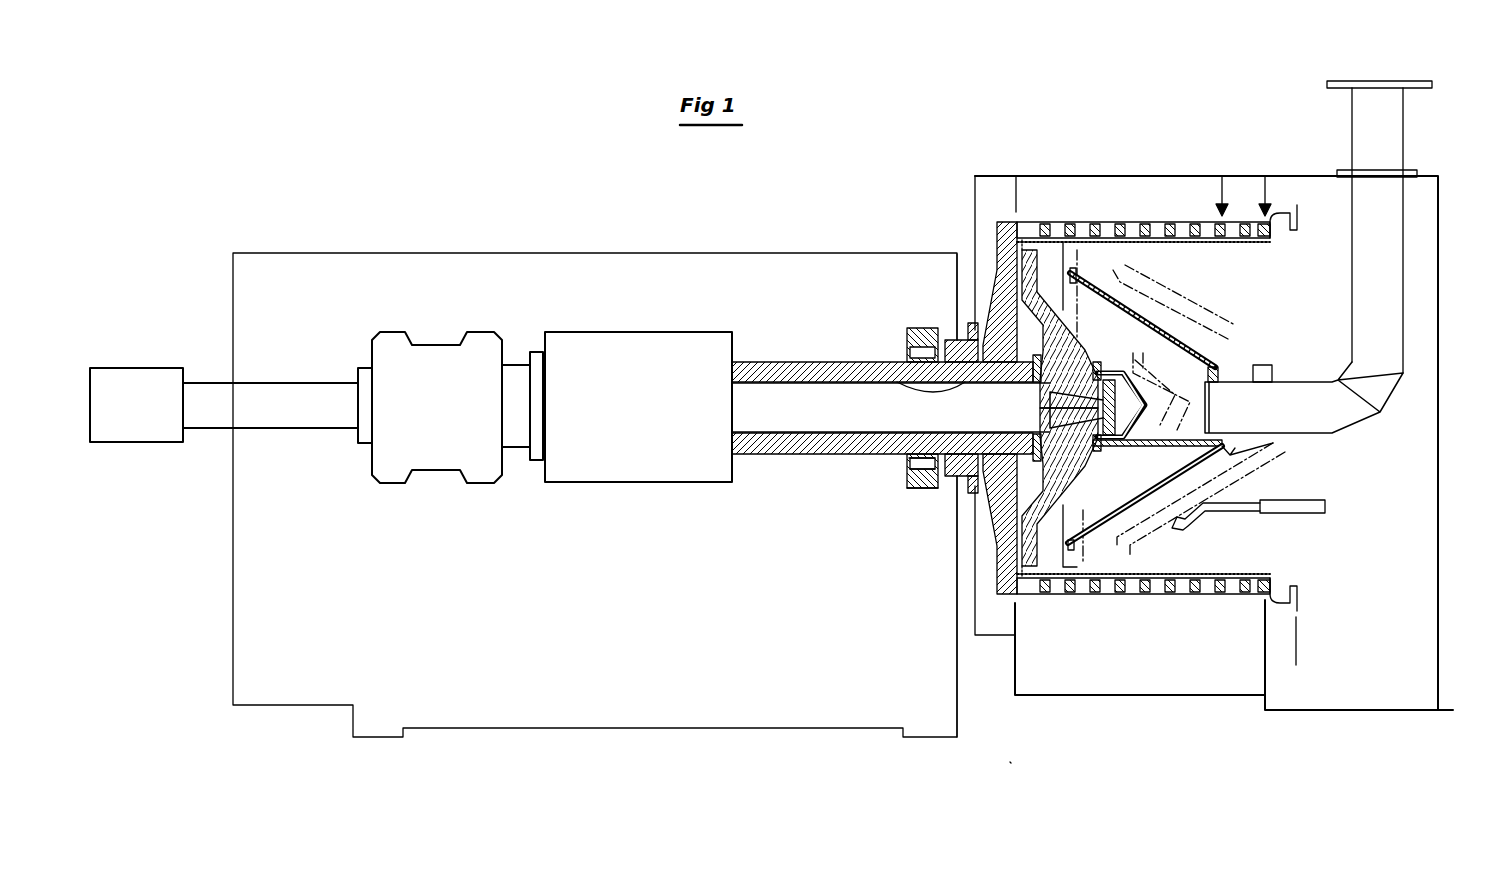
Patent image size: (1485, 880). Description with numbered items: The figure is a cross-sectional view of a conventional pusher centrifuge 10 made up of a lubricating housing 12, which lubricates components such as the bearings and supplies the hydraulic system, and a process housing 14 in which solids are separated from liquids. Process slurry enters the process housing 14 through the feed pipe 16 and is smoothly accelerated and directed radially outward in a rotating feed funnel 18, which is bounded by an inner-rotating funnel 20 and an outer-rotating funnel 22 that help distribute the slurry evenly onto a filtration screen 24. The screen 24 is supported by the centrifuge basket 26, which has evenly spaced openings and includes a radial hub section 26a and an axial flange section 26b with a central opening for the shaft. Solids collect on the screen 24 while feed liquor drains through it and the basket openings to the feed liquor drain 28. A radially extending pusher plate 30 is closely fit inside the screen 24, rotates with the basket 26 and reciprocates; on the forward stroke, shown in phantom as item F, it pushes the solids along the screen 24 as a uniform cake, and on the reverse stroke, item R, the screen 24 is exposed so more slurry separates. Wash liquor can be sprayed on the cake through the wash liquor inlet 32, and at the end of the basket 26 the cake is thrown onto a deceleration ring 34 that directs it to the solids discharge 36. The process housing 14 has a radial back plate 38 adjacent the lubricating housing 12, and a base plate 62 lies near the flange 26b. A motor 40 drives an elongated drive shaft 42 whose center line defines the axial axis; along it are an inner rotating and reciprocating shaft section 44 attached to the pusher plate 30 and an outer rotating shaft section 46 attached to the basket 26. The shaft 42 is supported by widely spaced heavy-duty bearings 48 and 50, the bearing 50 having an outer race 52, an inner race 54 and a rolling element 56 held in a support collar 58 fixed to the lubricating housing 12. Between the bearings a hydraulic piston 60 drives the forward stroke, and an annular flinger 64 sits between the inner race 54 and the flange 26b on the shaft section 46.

The pusher centrifuge 10 is at (1010, 761).
The lubricating housing 12 is at (745, 729).
The process housing 14 is at (1440, 253).
The feed pipe 16 is at (1404, 148).
The rotating feed funnel 18 is at (1215, 458).
The inner-rotating funnel 20 is at (1166, 350).
The outer-rotating funnel 22 is at (1213, 362).
The filtration screen 24 is at (1190, 242).
The centrifuge basket 26 is at (1160, 232).
The radial hub section 26a is at (994, 258).
The axial flange section 26b is at (898, 382).
The feed liquor drain 28 is at (1118, 688).
The pusher plate 30 is at (1024, 247).
The wash liquor inlet 32 is at (1312, 503).
The deceleration ring 34 is at (1283, 203).
The solids discharge 36 is at (1345, 700).
The radial back plate 38 is at (975, 190).
The motor 40 is at (141, 413).
The drive shaft 42 is at (215, 385).
The inner rotating and reciprocating shaft section 44 is at (808, 390).
The outer rotating shaft section 46 is at (771, 366).
The bearing 48 is at (434, 346).
The anti-friction rolling element bearing 50 is at (912, 334).
The outer race 52 is at (922, 488).
The inner race 54 is at (909, 461).
The rolling element 56 is at (910, 469).
The support collar 58 is at (907, 489).
The hydraulic piston 60 is at (630, 378).
The base plate 62 is at (957, 276).
The flinger 64 is at (948, 488).
The reverse stroke position R is at (1044, 268).
The forward stroke position F is at (1084, 268).